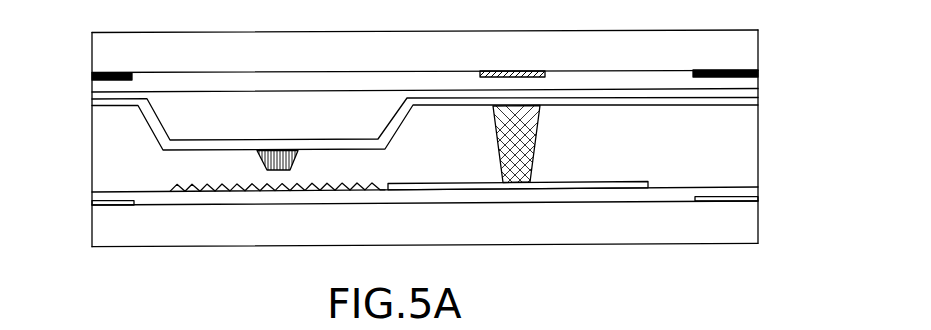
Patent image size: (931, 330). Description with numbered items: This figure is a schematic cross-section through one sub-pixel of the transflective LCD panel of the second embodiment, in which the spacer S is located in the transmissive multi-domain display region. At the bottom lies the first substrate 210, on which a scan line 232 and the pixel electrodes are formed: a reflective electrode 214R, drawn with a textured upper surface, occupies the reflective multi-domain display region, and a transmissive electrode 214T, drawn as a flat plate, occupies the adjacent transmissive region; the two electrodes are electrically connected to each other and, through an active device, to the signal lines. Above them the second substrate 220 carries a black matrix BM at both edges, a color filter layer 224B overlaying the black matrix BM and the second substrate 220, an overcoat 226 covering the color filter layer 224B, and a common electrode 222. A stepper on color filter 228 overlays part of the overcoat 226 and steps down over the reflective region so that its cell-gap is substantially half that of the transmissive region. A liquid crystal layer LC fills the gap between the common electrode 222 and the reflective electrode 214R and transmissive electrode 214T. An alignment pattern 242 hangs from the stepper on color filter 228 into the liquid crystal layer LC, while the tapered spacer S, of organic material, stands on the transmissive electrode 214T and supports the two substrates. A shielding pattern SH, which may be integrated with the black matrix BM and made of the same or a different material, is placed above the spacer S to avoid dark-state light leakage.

The second substrate 220 is at (741, 52).
The black matrix BM is at (110, 72).
The color filter layer 224B is at (425, 81).
The shielding pattern SH is at (512, 71).
The overcoat 226 is at (105, 98).
The common electrode 222 is at (748, 98).
The stepper on color filter 228 is at (190, 114).
The alignment pattern 242 is at (296, 162).
The spacer S is at (540, 137).
The reflective electrode 214R is at (388, 185).
The transmissive electrode 214T is at (553, 182).
The liquid crystal layer LC is at (753, 147).
The scan line 232 is at (100, 203).
The first substrate 210 is at (740, 233).